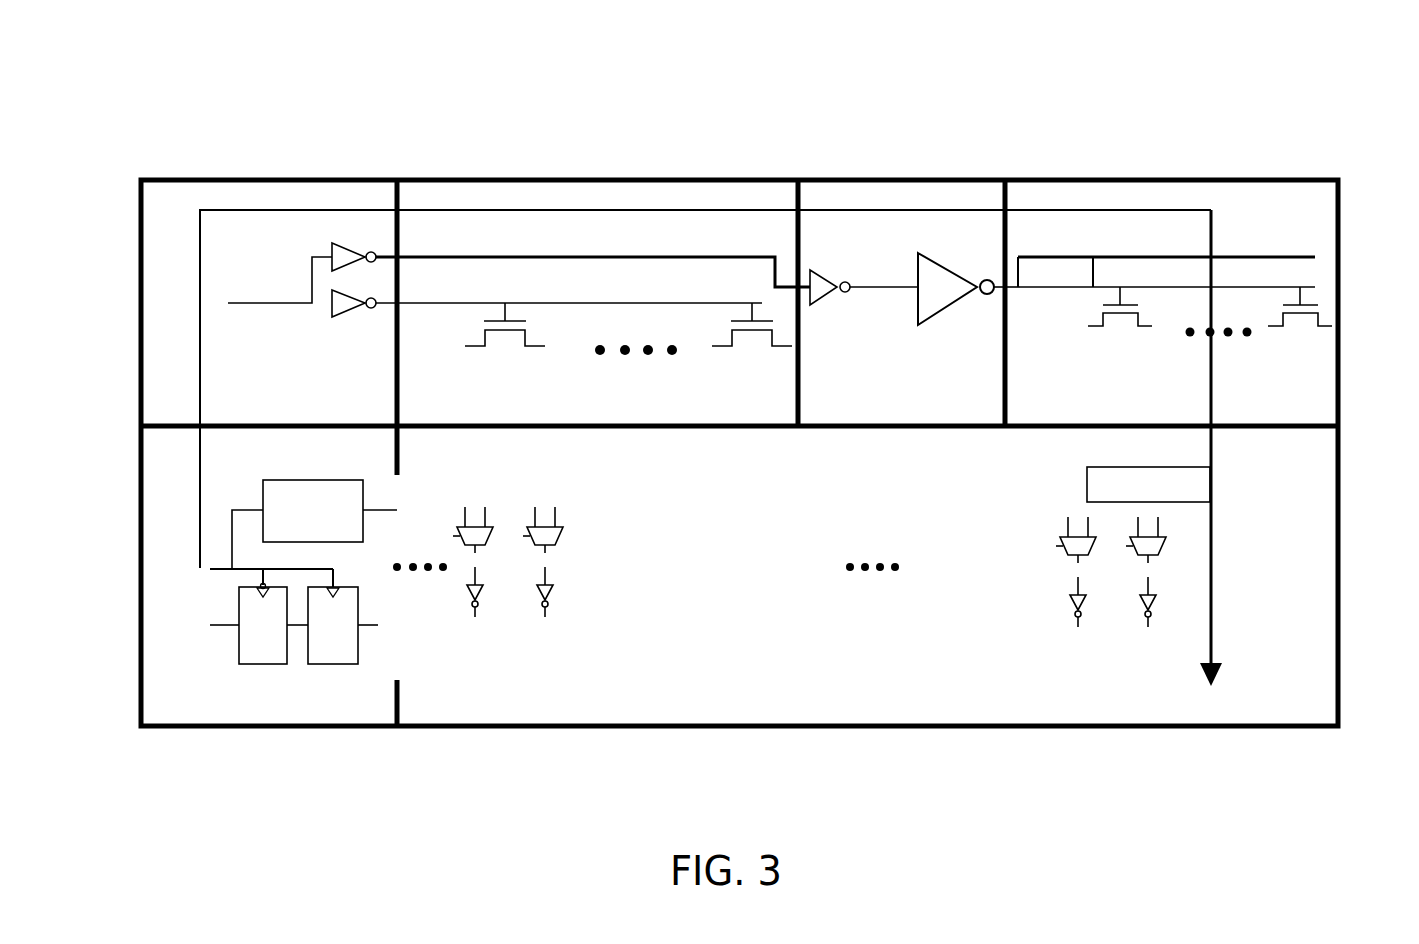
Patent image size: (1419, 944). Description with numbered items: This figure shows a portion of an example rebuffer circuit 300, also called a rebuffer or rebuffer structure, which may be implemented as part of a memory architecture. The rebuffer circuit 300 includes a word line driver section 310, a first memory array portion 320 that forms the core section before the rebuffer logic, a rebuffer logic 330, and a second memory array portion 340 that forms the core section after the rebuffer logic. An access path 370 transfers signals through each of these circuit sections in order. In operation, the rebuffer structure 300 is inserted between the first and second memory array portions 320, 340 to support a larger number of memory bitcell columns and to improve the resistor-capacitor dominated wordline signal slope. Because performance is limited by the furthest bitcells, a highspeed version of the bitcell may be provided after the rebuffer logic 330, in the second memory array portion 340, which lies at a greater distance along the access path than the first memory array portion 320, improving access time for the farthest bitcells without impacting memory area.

The rebuffer circuit 300 is at (206, 51).
The word line driver section 310 is at (160, 262).
The first memory array portion 320 is at (565, 197).
The rebuffer logic 330 is at (851, 197).
The second memory array portion 340 is at (1315, 220).
The access path 370 is at (1212, 560).